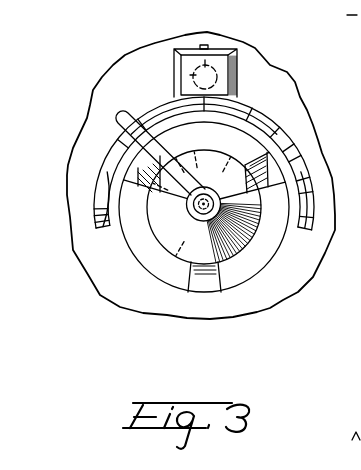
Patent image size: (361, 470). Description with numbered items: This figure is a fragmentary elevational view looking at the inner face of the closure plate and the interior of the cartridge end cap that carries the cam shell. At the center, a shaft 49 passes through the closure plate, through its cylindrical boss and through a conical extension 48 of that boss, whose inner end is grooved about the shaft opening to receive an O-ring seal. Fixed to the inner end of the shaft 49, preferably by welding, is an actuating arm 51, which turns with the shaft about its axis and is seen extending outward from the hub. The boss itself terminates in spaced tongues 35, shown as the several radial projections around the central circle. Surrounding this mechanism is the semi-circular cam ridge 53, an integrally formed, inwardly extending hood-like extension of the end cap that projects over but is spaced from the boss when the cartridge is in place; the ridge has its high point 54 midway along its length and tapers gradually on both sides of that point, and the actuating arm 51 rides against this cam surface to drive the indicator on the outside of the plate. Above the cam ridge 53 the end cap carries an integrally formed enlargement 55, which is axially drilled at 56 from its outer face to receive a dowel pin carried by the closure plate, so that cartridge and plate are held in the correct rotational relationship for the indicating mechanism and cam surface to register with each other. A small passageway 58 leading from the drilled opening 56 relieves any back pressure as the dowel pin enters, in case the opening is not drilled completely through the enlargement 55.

The spaced tongues 35 is at (211, 283).
The conical extension 48 is at (221, 202).
The shaft 49 is at (242, 222).
The actuating arm 51 is at (120, 131).
The cam ridge 53 is at (110, 173).
The high point 54 is at (213, 104).
The enlargement 55 is at (222, 62).
The drilled opening 56 is at (181, 73).
The small passageway 58 is at (208, 49).